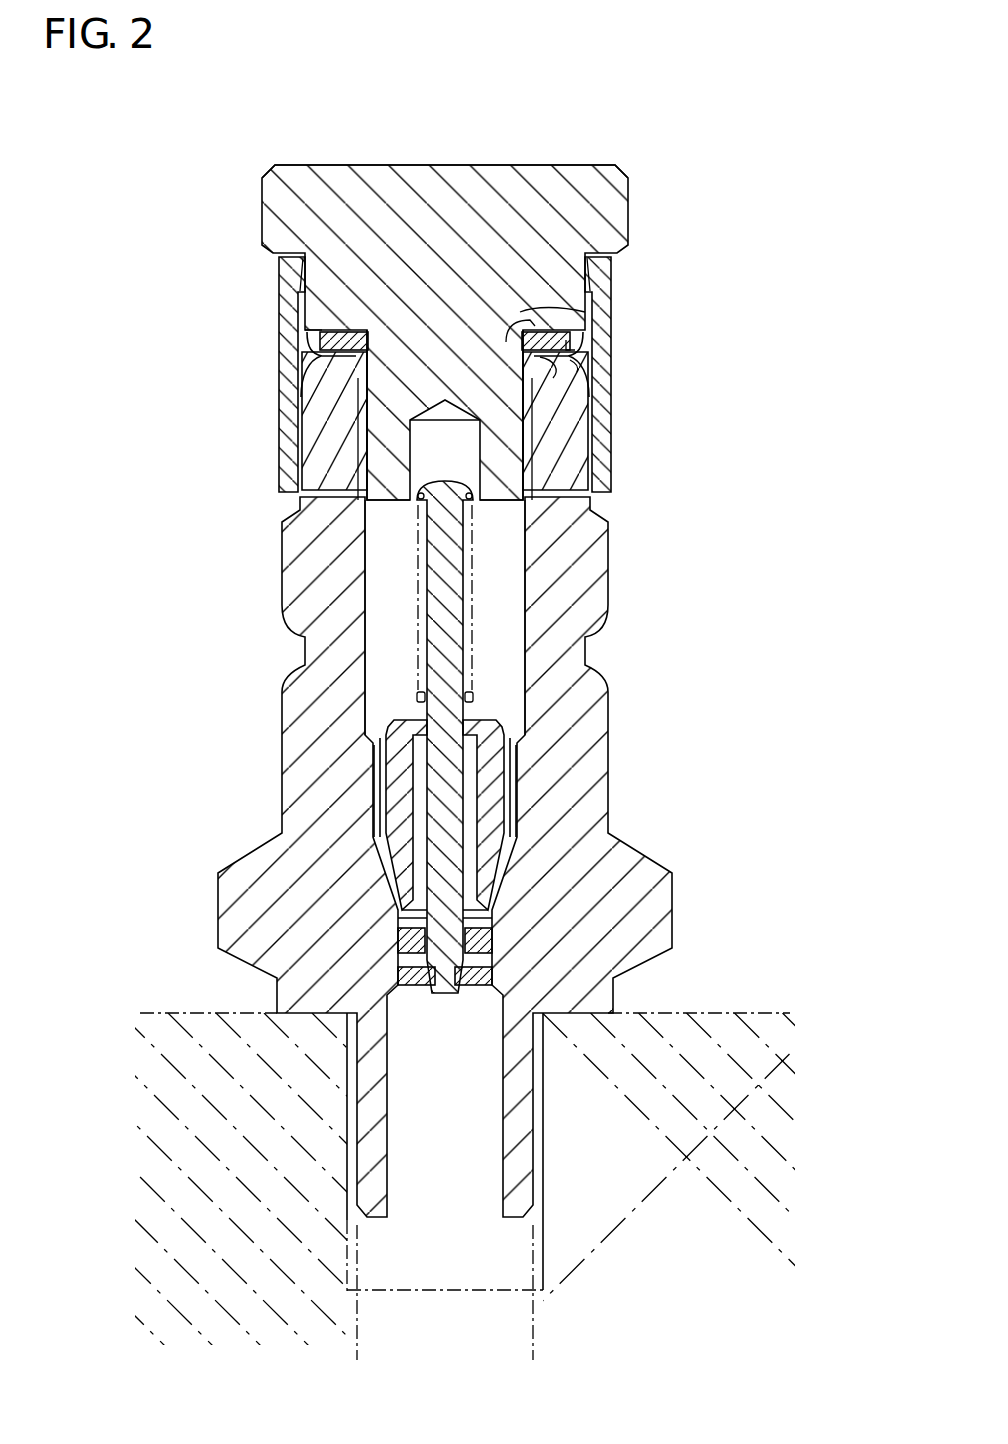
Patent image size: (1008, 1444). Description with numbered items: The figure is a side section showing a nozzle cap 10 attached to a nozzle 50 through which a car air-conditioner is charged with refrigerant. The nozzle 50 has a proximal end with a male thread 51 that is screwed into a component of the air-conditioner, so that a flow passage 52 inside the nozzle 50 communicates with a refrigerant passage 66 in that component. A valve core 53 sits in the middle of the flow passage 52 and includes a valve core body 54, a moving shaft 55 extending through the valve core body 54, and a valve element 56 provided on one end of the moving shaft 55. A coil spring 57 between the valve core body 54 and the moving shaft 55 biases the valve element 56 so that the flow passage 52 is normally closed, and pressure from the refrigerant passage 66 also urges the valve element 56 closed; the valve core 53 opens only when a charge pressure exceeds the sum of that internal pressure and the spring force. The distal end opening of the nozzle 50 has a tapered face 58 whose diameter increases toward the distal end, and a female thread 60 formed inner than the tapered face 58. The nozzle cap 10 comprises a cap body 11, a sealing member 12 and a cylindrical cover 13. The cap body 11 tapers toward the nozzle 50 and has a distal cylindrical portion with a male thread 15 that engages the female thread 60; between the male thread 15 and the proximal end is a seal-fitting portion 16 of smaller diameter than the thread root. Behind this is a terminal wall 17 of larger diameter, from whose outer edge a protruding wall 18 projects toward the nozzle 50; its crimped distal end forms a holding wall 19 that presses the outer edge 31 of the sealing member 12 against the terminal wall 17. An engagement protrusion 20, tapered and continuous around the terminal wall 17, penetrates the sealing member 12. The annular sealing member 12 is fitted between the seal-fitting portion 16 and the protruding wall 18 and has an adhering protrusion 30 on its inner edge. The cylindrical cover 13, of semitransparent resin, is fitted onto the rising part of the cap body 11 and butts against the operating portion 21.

The nozzle cap 10 is at (640, 161).
The cap body 11 is at (270, 164).
The sealing member 12 is at (168, 358).
The cylindrical cover 13 is at (272, 465).
The male thread 15 is at (525, 482).
The seal-fitting portion 16 is at (532, 312).
The terminal wall 17 is at (522, 325).
The protruding wall 18 is at (575, 340).
The holding wall 19 is at (577, 368).
The engagement protrusion 20 is at (336, 332).
The operating portion 21 is at (290, 208).
The adhering protrusion 30 is at (355, 382).
The outer edge 31 is at (320, 341).
The nozzle 50 is at (650, 565).
The male thread 51 is at (347, 1118).
The flow passage 52 is at (512, 632).
The valve core 53 is at (508, 723).
The valve core body 54 is at (495, 790).
The moving shaft 55 is at (445, 855).
The valve element 56 is at (485, 935).
The coil spring 57 is at (478, 693).
The tapered face 58 is at (553, 372).
The female thread 60 is at (540, 472).
The refrigerant passage 66 is at (375, 1322).